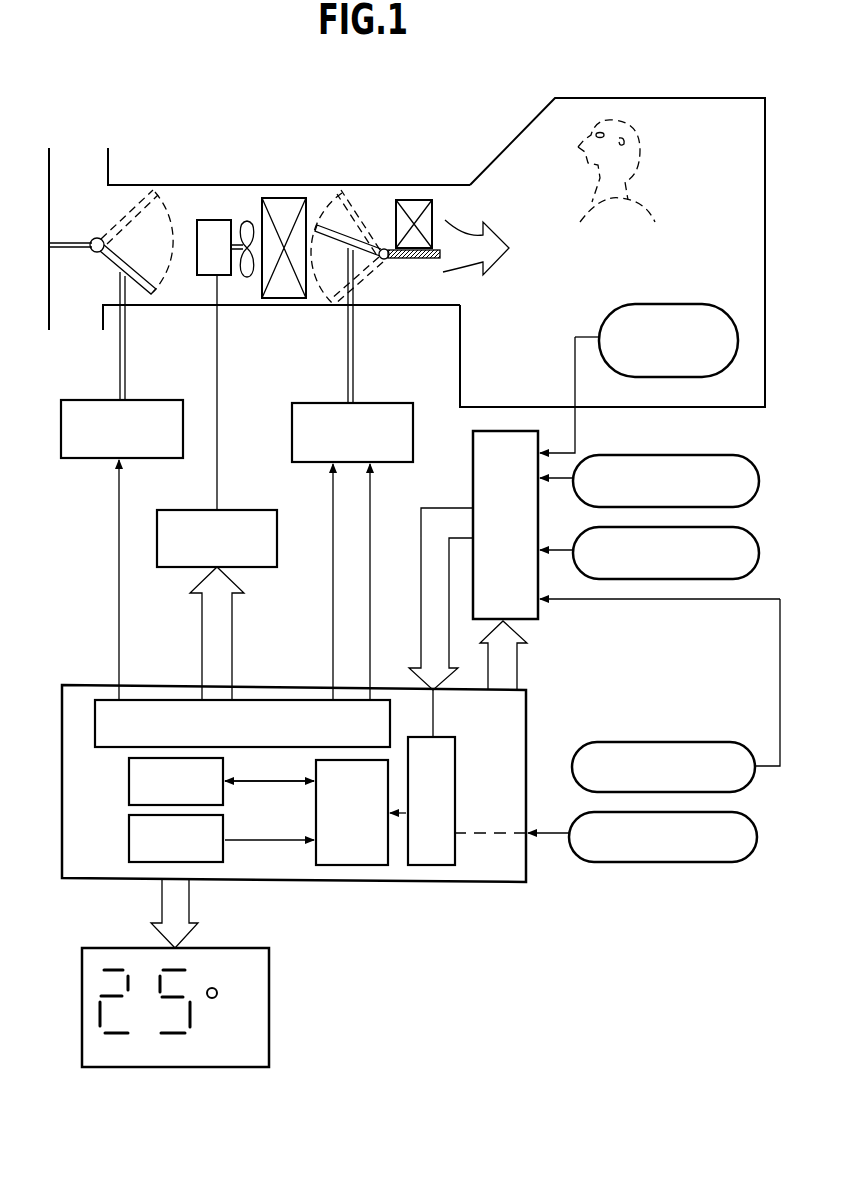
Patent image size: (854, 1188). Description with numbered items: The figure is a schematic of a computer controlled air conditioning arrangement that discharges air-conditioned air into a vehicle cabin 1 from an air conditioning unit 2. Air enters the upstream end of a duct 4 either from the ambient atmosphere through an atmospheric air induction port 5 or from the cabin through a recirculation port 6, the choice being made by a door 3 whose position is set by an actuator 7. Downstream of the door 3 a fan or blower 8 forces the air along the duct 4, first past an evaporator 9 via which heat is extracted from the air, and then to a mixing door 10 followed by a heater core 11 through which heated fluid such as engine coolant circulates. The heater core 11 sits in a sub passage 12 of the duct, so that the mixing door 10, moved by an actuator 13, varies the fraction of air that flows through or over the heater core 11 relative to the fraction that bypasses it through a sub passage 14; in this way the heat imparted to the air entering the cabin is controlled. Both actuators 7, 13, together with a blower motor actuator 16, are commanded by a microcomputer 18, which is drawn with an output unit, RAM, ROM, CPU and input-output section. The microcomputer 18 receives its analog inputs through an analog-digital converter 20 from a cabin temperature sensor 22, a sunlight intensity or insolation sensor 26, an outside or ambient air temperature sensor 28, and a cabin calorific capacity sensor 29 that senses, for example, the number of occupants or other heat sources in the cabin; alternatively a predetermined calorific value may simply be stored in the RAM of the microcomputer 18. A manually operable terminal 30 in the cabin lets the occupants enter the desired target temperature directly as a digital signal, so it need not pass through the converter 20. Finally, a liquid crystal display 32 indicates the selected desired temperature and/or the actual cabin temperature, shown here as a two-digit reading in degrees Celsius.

The vehicle cabin 1 is at (727, 122).
The air conditioning unit 2 is at (160, 135).
The door 3 is at (113, 260).
The duct 4 is at (182, 183).
The atmospheric air induction port 5 is at (79, 163).
The recirculation port 6 is at (98, 312).
The actuator 7 is at (165, 400).
The fan or blower 8 is at (218, 220).
The evaporator 9 is at (288, 198).
The mixing door 10 is at (372, 260).
The heater core 11 is at (414, 200).
The sub passage 12 is at (448, 207).
The actuator 13 is at (396, 403).
The sub passage 14 is at (435, 290).
The blower motor actuator 16 is at (258, 510).
The microcomputer 18 is at (498, 884).
The analog-digital converter 20 is at (472, 474).
The cabin temperature sensor 22 is at (707, 304).
The insolation sensor 26 is at (730, 455).
The outside air temperature sensor 28 is at (742, 533).
The cabin calorific capacity sensor 29 is at (725, 742).
The manually operable terminal 30 is at (730, 862).
The liquid crystal display 32 is at (270, 977).